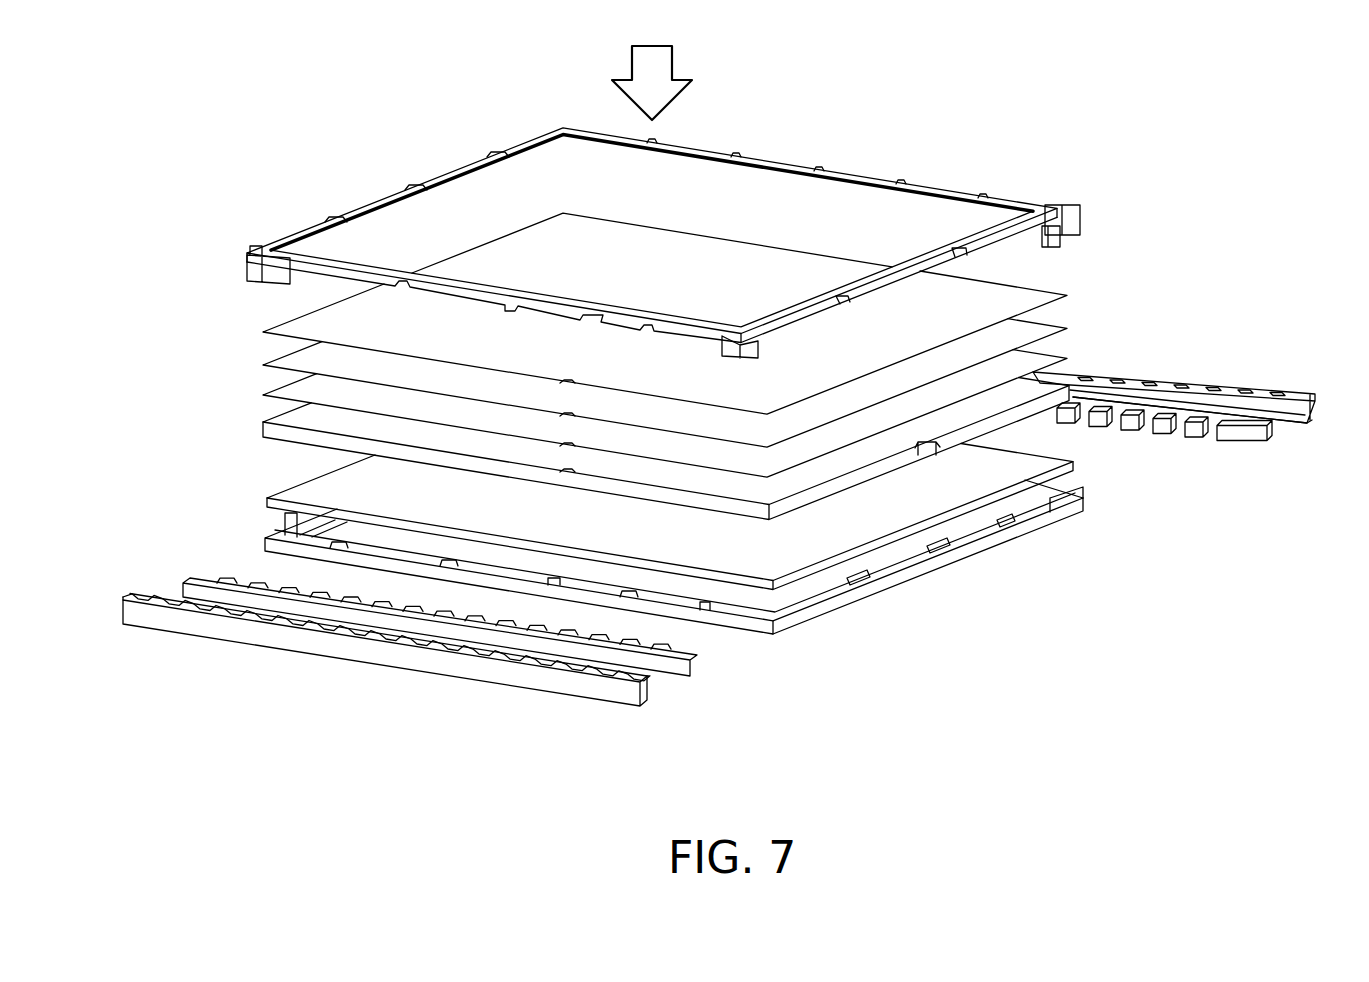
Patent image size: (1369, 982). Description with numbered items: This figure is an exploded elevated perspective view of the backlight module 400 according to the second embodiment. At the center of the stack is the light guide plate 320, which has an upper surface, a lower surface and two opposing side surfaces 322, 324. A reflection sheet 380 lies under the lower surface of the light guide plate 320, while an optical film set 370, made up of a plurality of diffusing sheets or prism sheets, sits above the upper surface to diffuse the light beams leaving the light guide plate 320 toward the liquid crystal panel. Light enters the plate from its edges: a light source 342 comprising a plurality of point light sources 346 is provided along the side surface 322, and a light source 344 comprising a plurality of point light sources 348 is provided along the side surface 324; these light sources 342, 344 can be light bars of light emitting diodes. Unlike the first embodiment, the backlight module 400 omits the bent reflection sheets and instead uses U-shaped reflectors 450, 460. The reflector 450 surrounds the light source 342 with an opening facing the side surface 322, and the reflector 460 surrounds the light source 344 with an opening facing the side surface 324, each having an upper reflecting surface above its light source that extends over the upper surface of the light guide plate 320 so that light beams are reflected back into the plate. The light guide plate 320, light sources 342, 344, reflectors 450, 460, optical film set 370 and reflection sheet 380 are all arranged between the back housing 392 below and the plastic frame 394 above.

The backlight module 400 is at (432, 140).
The plastic frame 394 is at (1074, 202).
The optical film set 370 is at (1080, 295).
The side surface 322 is at (747, 507).
The reflection sheet 380 is at (821, 565).
The back housing 392 is at (955, 525).
The light guide plate 320 is at (1188, 396).
The side surface 324 is at (1110, 367).
The U-shaped reflector 460 is at (1290, 400).
The light source 344 is at (1176, 455).
The point light sources 348 is at (1195, 433).
The light source 342 is at (437, 643).
The point light sources 346 is at (232, 580).
The U-shaped reflector 450 is at (332, 644).